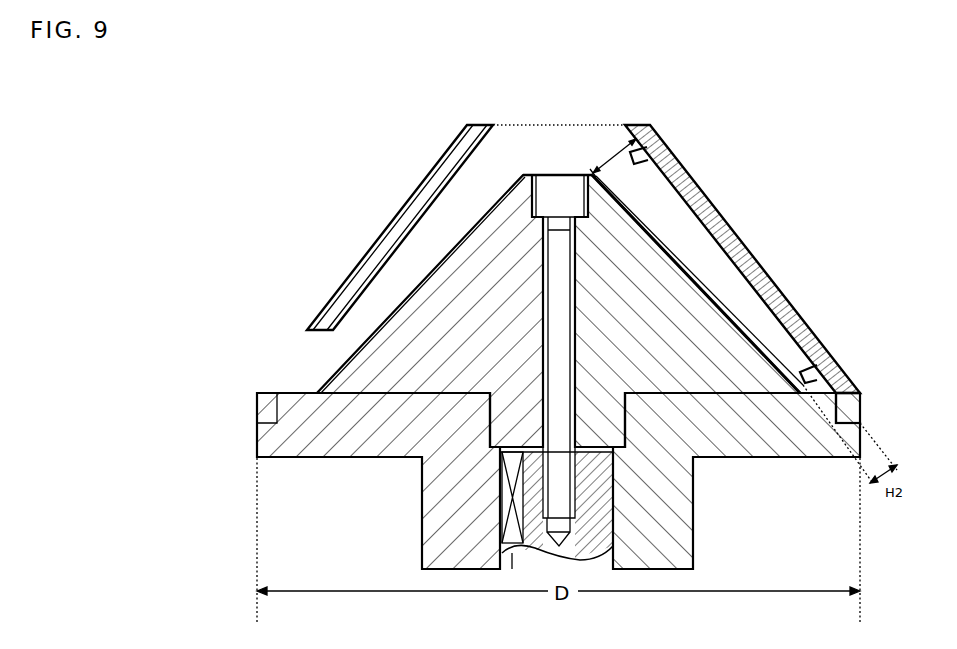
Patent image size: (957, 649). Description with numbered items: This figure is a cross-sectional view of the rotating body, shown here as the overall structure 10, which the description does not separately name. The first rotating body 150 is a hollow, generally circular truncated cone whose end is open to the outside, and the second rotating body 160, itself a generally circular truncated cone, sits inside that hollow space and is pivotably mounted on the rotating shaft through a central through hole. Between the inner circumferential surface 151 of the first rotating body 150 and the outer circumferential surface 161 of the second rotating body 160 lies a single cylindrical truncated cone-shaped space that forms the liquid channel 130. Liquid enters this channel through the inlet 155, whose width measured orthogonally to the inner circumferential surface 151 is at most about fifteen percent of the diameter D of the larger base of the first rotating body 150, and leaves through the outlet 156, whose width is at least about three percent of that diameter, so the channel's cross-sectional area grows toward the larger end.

The heating device 10 is at (322, 93).
The liquid channel 130 is at (397, 270).
The first rotating body 150 is at (413, 200).
The inner circumferential surface 151 is at (447, 177).
The inlet 155 is at (593, 170).
The outlet 156 is at (813, 380).
The second rotating body 160 is at (653, 253).
The outer circumferential surface 161 is at (693, 282).